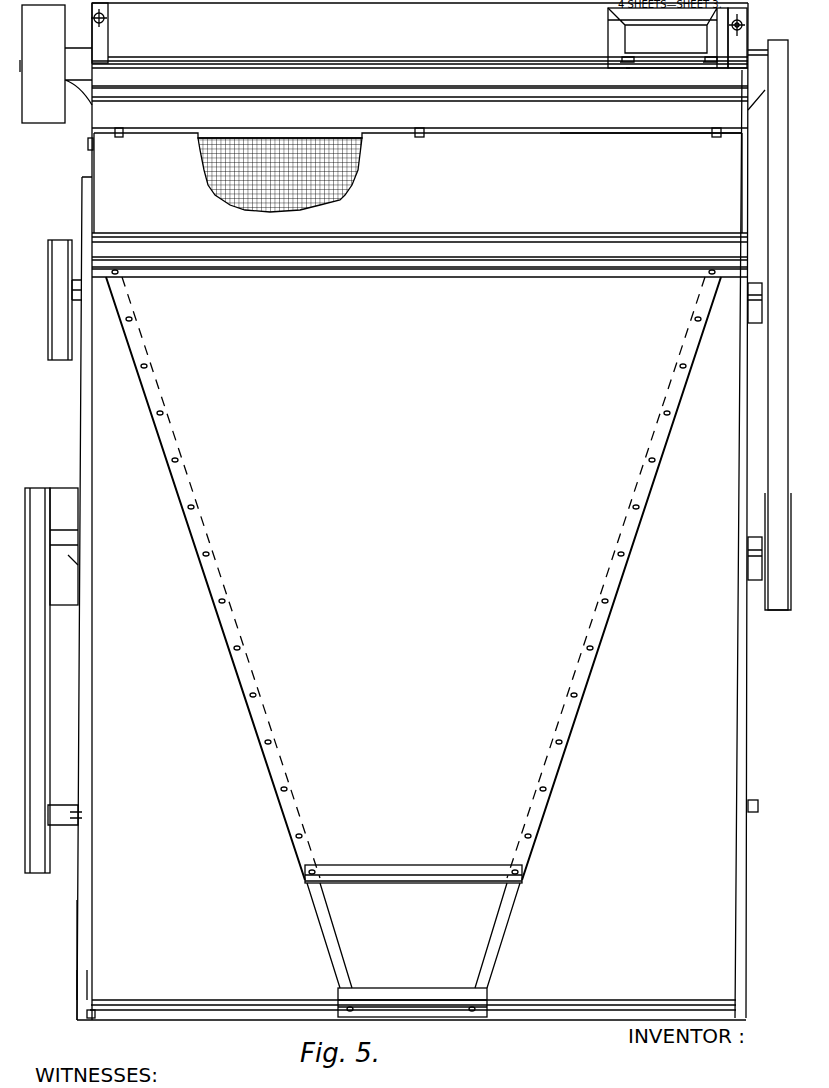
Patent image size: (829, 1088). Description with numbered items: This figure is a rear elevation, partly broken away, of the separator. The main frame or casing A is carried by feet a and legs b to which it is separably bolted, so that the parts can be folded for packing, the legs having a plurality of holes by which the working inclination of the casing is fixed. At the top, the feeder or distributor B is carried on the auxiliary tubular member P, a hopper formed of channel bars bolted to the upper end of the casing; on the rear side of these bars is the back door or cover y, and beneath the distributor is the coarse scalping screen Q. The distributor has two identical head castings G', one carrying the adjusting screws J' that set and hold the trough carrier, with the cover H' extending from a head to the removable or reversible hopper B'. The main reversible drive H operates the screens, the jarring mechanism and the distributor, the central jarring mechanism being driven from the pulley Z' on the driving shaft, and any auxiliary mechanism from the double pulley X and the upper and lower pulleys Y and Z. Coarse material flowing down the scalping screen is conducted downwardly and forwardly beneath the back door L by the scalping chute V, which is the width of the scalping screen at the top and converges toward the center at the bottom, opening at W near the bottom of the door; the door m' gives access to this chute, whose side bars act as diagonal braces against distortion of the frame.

The inclined bottom L is at (412, 511).
The feeder or distributor B is at (420, 35).
The cover H' is at (420, 59).
The head casting G' is at (120, 33).
The main reversible drive H is at (56, 64).
The hopper B' is at (668, 38).
The adjusting screw J' is at (711, 38).
The pulley Z' is at (769, 411).
The auxiliary tubular member P is at (418, 180).
The back door or cover y is at (651, 165).
The scalping screen Q is at (352, 181).
The door m' is at (420, 239).
The upper pulley Y is at (60, 240).
The double pulley X is at (48, 610).
The lower pulley Z is at (53, 700).
The main frame or casing A is at (55, 960).
The leg b is at (77, 982).
The foot a is at (92, 1022).
The scalping chute V is at (413, 575).
The opening W is at (413, 941).